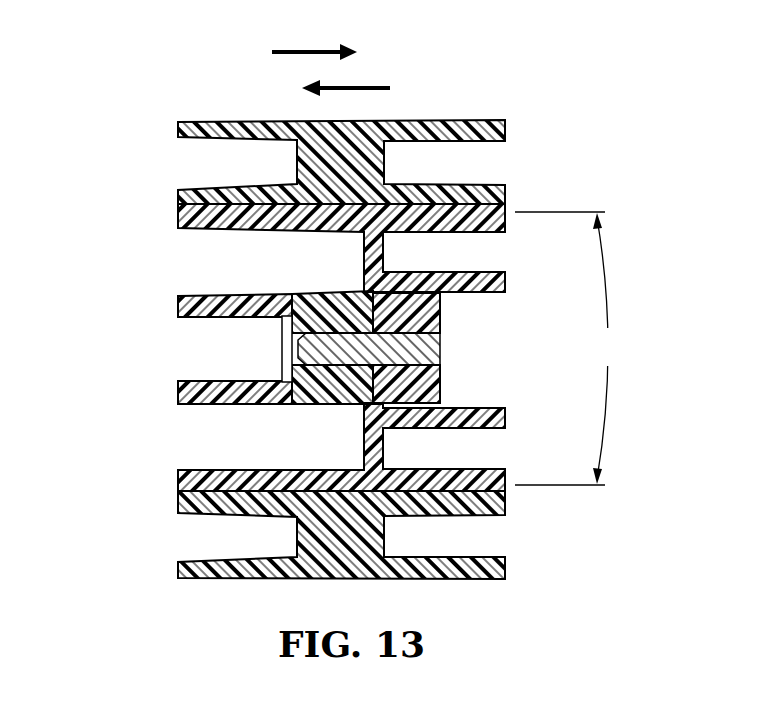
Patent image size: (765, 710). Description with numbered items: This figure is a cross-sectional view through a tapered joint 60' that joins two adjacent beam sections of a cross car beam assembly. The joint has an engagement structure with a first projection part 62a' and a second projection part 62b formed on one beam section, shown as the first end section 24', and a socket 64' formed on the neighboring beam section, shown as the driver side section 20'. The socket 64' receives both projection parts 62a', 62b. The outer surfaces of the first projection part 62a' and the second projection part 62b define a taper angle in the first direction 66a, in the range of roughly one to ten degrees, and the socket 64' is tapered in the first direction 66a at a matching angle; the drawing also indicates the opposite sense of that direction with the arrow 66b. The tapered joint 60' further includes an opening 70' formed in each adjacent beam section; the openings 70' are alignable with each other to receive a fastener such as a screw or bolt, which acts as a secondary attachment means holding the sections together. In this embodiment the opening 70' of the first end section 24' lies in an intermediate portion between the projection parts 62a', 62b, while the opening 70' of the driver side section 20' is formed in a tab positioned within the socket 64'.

The driver side section 20' is at (335, 125).
The first end section 24' is at (224, 347).
The tapered joint 60' is at (346, 343).
The first projection part 62a' is at (386, 266).
The second projection part 62b is at (500, 408).
The socket 64' is at (298, 528).
The first direction 66a is at (297, 52).
The second flow direction 66b is at (371, 88).
The opening 70' is at (361, 348).